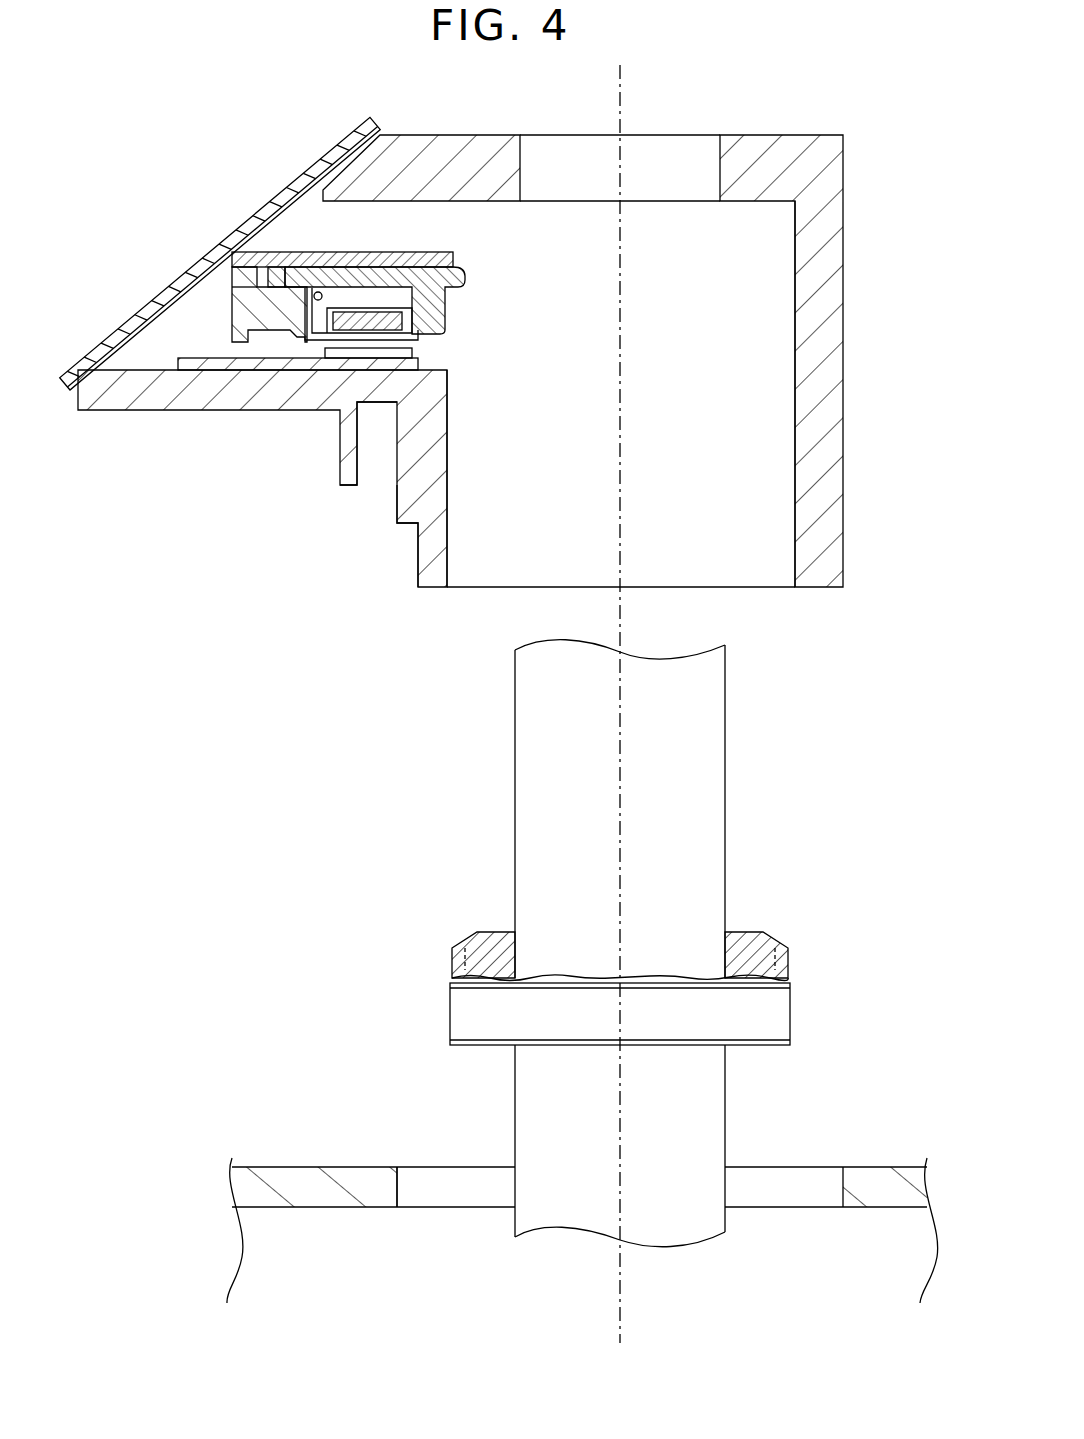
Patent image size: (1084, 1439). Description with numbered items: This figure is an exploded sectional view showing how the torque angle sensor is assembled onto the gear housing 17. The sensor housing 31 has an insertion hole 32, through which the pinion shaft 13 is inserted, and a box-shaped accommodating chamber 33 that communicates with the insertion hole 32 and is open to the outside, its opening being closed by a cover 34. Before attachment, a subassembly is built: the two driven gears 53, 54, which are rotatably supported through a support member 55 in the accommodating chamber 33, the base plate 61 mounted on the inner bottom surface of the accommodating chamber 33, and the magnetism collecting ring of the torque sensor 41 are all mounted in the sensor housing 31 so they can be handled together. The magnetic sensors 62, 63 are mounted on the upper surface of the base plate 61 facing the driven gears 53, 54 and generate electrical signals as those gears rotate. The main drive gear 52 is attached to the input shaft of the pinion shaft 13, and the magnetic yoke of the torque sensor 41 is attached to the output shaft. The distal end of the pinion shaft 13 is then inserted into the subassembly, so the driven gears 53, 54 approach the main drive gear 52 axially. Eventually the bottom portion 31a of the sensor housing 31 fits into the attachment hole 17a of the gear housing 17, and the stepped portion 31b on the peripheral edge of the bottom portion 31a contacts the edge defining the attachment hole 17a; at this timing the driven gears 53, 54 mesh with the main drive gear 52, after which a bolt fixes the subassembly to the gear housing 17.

The pinion shaft 13 is at (727, 722).
The gear housing 17 is at (868, 1167).
The attachment hole 17a is at (397, 1190).
The sensor housing 31 is at (845, 172).
The bottom portion 31a is at (397, 522).
The stepped portion 31b is at (343, 483).
The insertion hole 32 is at (777, 258).
The accommodating chamber 33 is at (337, 245).
The cover 34 is at (305, 168).
The torque sensor 41 is at (792, 1011).
The main drive gear 52 is at (762, 930).
The driven gear 53 is at (380, 268).
The driven gear 54 is at (342, 259).
The support member 55 is at (235, 325).
The base plate 61 is at (210, 372).
The magnetic sensor 62 is at (413, 352).
The magnetic sensor 63 is at (367, 321).